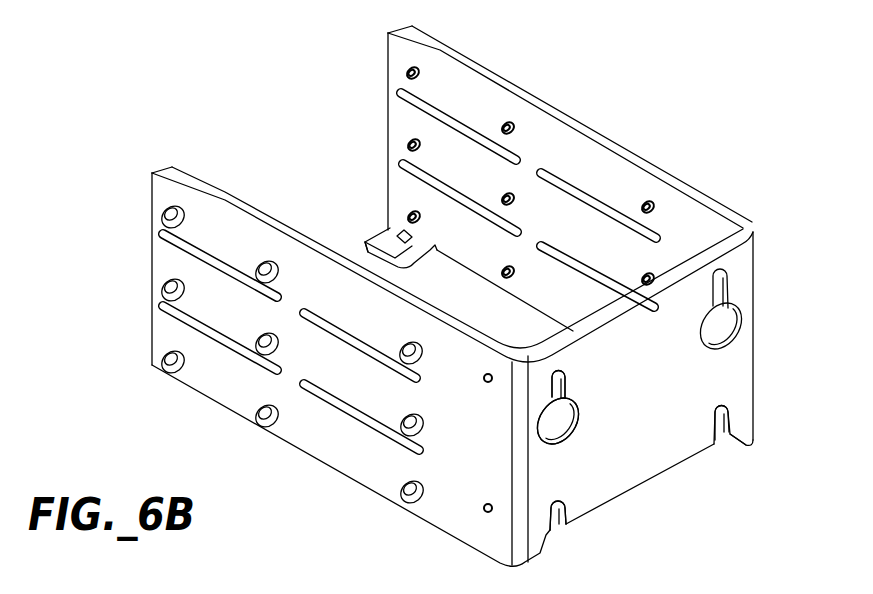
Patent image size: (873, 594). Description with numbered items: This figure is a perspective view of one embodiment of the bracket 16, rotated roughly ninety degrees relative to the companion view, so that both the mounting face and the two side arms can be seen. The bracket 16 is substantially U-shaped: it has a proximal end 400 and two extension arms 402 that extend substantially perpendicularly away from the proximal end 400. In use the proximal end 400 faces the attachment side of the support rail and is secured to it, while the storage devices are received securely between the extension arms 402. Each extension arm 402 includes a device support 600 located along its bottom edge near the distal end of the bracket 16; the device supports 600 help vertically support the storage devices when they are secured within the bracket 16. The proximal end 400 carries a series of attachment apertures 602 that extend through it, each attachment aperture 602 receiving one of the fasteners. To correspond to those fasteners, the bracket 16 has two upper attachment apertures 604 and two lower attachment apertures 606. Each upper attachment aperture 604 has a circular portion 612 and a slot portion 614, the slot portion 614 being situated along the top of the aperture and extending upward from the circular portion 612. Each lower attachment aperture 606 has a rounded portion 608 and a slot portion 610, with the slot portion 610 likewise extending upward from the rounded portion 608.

The bracket 16 is at (640, 118).
The proximal end 400 is at (692, 447).
The extension arm 402 is at (500, 77).
The device support 600 is at (382, 232).
The attachment aperture 602 is at (582, 420).
The upper attachment aperture 604 is at (558, 411).
The lower attachment aperture 606 is at (558, 515).
The rounded portion 608 is at (736, 443).
The slot portion 610 is at (732, 418).
The circular portion 612 is at (748, 318).
The slot portion 614 is at (733, 283).